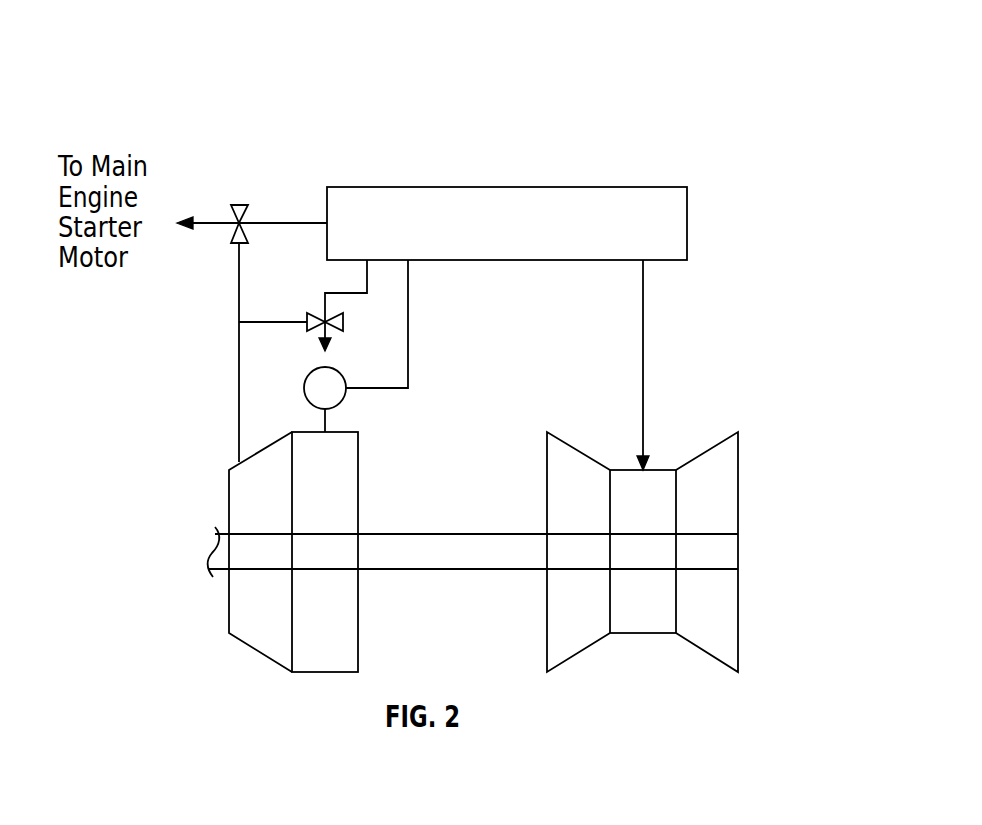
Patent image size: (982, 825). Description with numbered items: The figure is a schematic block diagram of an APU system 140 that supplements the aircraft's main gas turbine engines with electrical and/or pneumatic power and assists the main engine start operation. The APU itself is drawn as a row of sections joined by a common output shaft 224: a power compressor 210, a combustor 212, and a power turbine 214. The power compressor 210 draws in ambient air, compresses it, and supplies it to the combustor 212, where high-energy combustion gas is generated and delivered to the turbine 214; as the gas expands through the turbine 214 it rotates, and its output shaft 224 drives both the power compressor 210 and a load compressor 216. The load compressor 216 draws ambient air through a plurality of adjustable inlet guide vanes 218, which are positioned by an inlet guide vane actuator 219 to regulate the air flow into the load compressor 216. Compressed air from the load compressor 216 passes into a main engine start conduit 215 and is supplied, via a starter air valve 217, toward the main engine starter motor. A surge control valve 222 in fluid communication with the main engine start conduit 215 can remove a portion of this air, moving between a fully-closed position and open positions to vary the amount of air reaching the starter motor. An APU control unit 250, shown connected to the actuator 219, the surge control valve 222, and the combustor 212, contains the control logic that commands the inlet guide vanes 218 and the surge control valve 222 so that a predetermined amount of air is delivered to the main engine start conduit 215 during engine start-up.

The APU system 140 is at (717, 73).
The APU control unit 250 is at (352, 187).
The main engine start conduit 215 is at (215, 222).
The starter air valve 217 is at (236, 244).
The surge control valve 222 is at (318, 316).
The inlet guide vane actuator 219 is at (318, 367).
The output shaft 224 is at (483, 533).
The load compressor 216 is at (228, 617).
The inlet guide vanes 218 is at (359, 616).
The power compressor 210 is at (546, 616).
The combustor 212 is at (658, 466).
The power turbine 214 is at (739, 616).